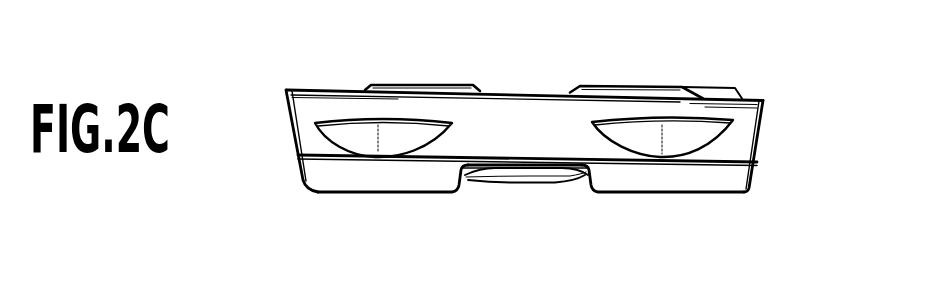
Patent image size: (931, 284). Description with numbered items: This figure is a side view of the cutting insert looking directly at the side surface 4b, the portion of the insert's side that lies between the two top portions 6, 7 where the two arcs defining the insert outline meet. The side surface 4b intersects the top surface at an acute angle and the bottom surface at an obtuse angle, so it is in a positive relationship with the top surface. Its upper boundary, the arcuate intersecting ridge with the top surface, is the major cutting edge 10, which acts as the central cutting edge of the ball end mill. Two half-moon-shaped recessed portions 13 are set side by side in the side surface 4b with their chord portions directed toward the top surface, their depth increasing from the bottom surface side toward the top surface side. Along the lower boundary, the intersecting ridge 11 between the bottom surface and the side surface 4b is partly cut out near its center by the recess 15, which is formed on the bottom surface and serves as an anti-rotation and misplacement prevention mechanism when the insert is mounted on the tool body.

The top portion 6 is at (291, 88).
The top portion 7 is at (764, 98).
The major cutting edge 10 is at (516, 90).
The intersecting ridge 11 is at (714, 194).
The recessed portion 13 is at (383, 140).
The recess 15 is at (478, 178).
The side surface 4b is at (560, 127).